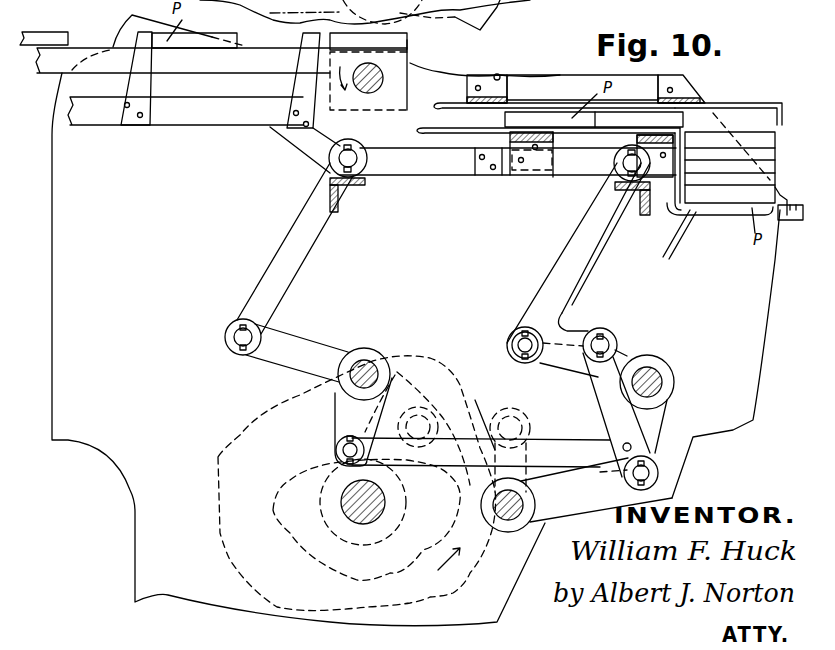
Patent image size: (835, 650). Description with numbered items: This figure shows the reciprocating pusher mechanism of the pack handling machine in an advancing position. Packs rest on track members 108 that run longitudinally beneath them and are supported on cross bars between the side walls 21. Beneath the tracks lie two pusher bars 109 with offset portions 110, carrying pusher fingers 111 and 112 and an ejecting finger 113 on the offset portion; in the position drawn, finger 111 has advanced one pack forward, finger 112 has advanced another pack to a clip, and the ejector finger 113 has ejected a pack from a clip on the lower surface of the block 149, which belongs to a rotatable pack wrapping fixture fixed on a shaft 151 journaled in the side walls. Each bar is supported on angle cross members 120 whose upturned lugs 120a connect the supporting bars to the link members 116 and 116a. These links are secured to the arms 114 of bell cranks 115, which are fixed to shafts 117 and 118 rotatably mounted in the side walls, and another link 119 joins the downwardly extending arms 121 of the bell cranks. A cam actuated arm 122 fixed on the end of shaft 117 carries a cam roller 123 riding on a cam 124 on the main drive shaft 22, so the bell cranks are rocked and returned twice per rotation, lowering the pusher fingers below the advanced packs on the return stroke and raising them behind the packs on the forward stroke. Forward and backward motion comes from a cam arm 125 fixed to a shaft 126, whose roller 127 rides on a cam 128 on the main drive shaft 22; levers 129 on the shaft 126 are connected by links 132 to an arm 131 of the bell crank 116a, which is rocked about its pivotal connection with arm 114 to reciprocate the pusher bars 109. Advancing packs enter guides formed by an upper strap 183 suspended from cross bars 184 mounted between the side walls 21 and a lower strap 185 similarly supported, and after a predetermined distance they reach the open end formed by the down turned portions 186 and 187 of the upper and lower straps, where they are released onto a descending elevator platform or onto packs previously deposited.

The side walls 21 is at (58, 272).
The main drive shaft 22 is at (340, 503).
The track members 108 is at (97, 47).
The pusher bars 109 is at (173, 125).
The offset portions 110 is at (450, 176).
The pusher finger 111 is at (122, 88).
The pusher finger 112 is at (290, 88).
The ejecting finger 113 is at (472, 138).
The arms 114 is at (303, 338).
The bell cranks 115 is at (374, 351).
The link members 116 is at (310, 253).
The link member 116a is at (560, 261).
The shaft 117 is at (353, 373).
The shaft 118 is at (650, 373).
The link 119 is at (463, 437).
The angle cross members 120 is at (330, 195).
The upturned lugs 120a is at (380, 141).
The downwardly extending arms 121 is at (335, 417).
The cam actuated arm 122 is at (407, 390).
The cam roller 123 is at (443, 407).
The cam 124 is at (306, 552).
The cam arm 125 is at (527, 452).
The shaft 126 is at (481, 505).
The roller 127 is at (511, 417).
The cam 128 is at (222, 535).
The levers 129 is at (537, 473).
The arm 131 is at (580, 325).
The links 132 is at (548, 463).
The block 149 is at (410, 67).
The shaft 151 is at (383, 88).
The upper strap 183 is at (725, 110).
The cross bars 184 is at (509, 102).
The lower strap 185 is at (597, 135).
The down turned portion 186 is at (790, 103).
The down turned portion 187 is at (668, 210).